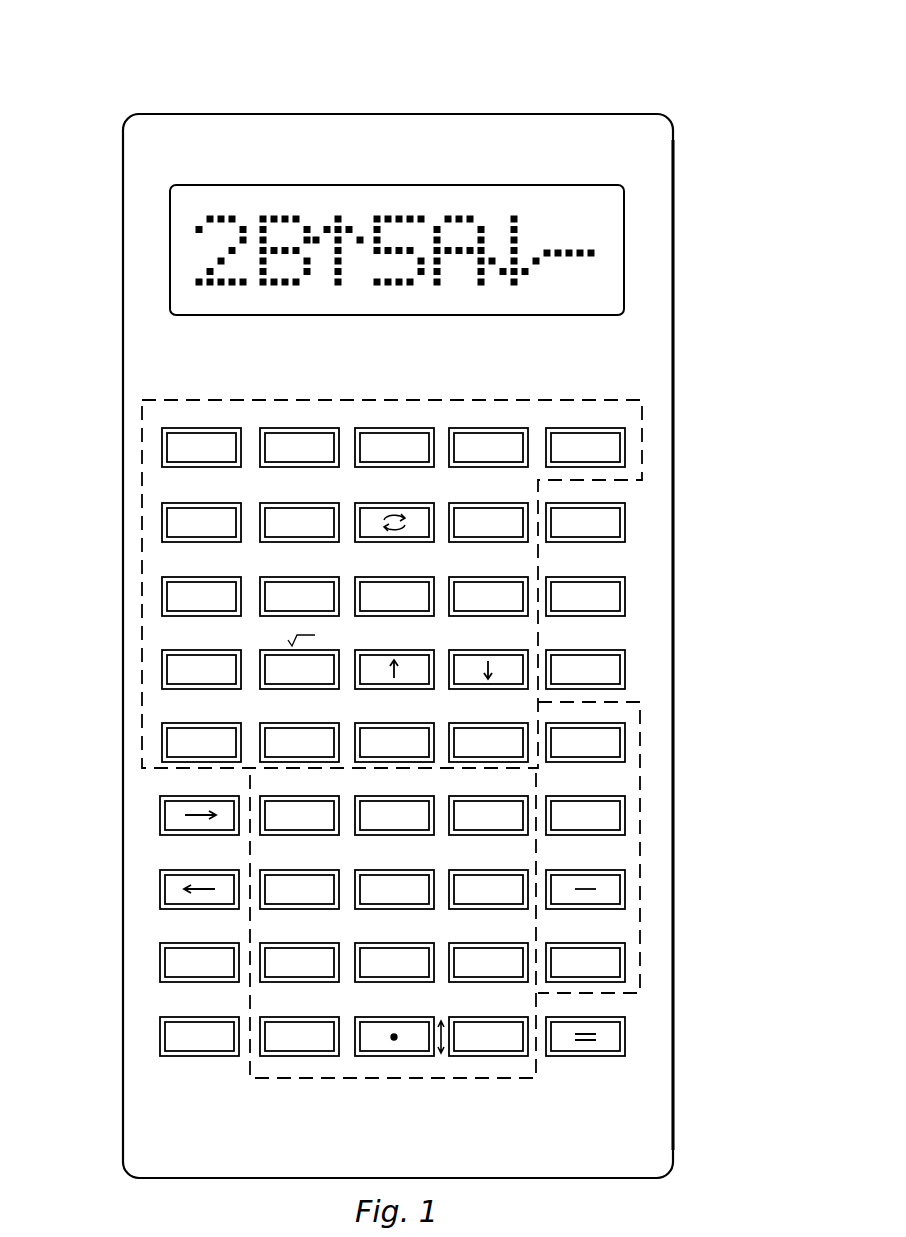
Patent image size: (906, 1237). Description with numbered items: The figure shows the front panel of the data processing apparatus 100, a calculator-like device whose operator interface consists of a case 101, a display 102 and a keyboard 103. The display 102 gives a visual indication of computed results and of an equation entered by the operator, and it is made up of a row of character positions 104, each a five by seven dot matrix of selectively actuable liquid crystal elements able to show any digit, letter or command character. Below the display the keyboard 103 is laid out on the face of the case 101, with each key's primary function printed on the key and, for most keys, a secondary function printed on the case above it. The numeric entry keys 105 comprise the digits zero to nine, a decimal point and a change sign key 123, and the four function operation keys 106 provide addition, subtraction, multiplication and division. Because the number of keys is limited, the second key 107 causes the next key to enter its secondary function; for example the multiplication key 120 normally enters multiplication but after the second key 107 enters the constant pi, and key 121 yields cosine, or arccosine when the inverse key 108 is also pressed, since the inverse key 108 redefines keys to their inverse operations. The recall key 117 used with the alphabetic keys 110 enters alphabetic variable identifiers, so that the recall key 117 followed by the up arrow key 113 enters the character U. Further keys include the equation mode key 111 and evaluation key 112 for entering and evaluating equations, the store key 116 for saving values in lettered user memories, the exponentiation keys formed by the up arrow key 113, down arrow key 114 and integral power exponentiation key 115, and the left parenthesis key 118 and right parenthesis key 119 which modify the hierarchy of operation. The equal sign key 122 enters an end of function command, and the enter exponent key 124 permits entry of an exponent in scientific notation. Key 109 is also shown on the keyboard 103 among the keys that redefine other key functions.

The data processing apparatus 100 is at (725, 80).
The case 101 is at (671, 257).
The display 102 is at (226, 185).
The keyboard 103 is at (643, 400).
The character position 104 is at (353, 190).
The numeric entry keys 105 is at (306, 1079).
The four function operation keys 106 is at (643, 848).
The second key 107 is at (606, 520).
The inverse key 108 is at (615, 594).
The ALPH key 109 is at (615, 668).
The keys 110 is at (142, 400).
The equation mode key 111 is at (177, 520).
The evaluation key 112 is at (278, 520).
The up arrow key 113 is at (361, 657).
The down arrow key 114 is at (520, 662).
The integral power exponentiation key 115 is at (272, 680).
The store key 116 is at (366, 587).
The recall key 117 is at (516, 587).
The left parenthesis key 118 is at (362, 738).
The right parenthesis key 119 is at (516, 740).
The multiplication key 120 is at (607, 807).
The cosine key 121 is at (607, 958).
The equal sign key 122 is at (606, 1032).
The change sign key 123 is at (508, 1048).
The enter exponent key 124 is at (277, 758).